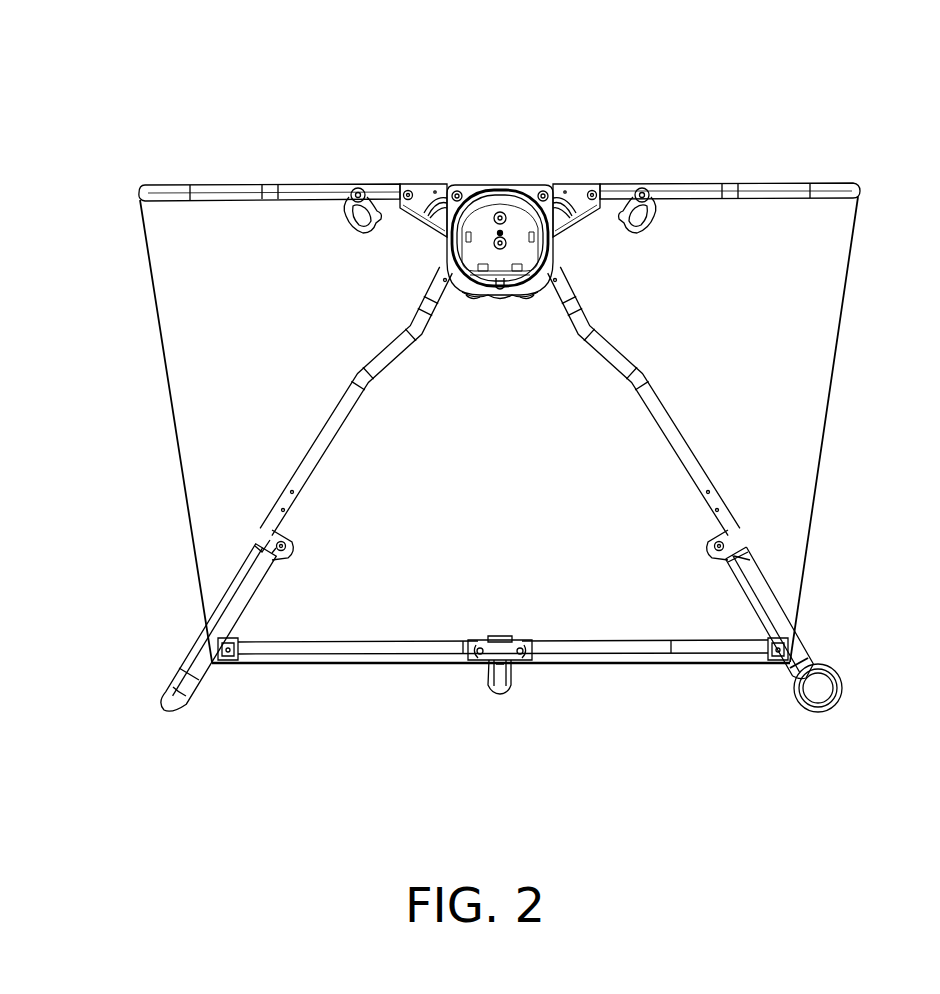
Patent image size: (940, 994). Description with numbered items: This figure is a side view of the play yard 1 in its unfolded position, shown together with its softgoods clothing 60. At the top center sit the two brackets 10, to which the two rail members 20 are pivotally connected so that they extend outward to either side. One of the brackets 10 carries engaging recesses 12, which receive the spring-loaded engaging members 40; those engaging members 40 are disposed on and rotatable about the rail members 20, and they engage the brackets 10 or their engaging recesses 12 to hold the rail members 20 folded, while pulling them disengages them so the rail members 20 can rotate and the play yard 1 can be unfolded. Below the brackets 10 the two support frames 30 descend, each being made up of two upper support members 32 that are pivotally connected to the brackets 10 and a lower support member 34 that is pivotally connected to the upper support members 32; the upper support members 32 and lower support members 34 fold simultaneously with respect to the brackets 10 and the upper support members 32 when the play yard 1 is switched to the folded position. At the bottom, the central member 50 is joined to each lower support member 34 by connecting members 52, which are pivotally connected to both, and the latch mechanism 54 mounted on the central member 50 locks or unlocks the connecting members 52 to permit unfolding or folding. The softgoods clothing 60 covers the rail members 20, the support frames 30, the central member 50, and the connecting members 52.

The play yard 1 is at (812, 80).
The bracket 10 is at (500, 185).
The engaging recess 12 is at (474, 302).
The rail member 20 is at (215, 188).
The support frame 30 is at (120, 395).
The upper support member 32 is at (320, 448).
The lower support member 34 is at (240, 590).
The engaging member 40 is at (358, 233).
The central member 50 is at (518, 680).
The connecting member 52 is at (670, 655).
The latch mechanism 54 is at (497, 632).
The softgoods clothing 60 is at (848, 297).